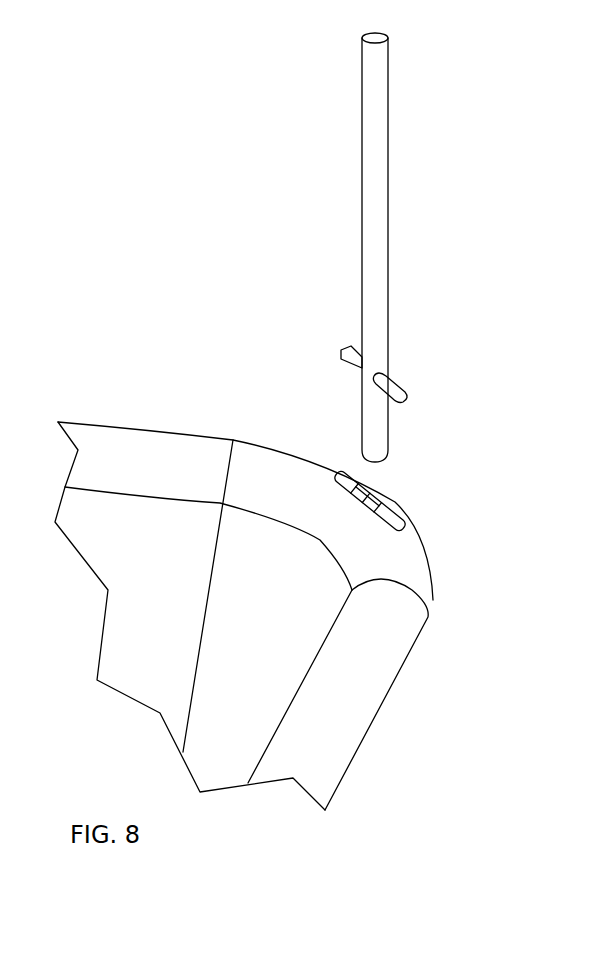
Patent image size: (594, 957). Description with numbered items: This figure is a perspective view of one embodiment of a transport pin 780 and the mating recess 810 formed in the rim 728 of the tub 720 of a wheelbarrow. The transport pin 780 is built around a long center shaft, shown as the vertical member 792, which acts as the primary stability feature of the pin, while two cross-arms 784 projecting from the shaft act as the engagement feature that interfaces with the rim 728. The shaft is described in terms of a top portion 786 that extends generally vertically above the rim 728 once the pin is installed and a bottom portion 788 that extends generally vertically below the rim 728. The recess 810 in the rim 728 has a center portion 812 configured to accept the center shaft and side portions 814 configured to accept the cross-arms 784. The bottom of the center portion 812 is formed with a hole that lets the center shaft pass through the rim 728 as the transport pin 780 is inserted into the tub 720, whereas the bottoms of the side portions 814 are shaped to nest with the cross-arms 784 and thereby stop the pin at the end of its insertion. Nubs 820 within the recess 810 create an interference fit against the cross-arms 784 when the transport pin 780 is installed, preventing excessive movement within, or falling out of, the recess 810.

The tub 720 is at (228, 820).
The rim 728 is at (145, 448).
The transport pin 780 is at (291, 167).
The cross-arms 784 is at (345, 350).
The top portion 786 is at (346, 265).
The bottom portion 788 is at (350, 405).
The rod 792 is at (382, 152).
The recess 810 is at (398, 482).
The center portion 812 is at (391, 497).
The side portions 814 is at (349, 488).
The nubs 820 is at (365, 486).